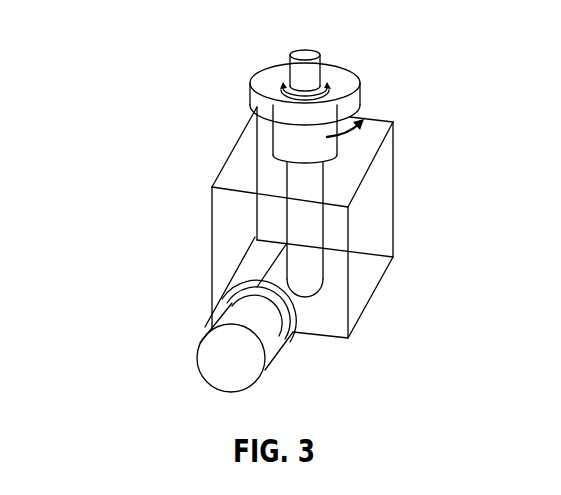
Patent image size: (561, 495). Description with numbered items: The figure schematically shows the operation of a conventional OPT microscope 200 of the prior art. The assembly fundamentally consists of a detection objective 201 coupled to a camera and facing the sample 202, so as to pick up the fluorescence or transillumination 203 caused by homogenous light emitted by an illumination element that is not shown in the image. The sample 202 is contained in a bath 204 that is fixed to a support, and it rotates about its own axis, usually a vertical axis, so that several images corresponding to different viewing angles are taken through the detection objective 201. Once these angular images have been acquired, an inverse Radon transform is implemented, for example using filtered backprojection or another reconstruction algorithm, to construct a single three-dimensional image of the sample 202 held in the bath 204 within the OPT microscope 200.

The OPT microscope 200 is at (144, 94).
The detection objective 201 is at (238, 323).
The sample 202 is at (305, 237).
The fluorescence or transillumination 203 is at (268, 272).
The bath 204 is at (356, 82).